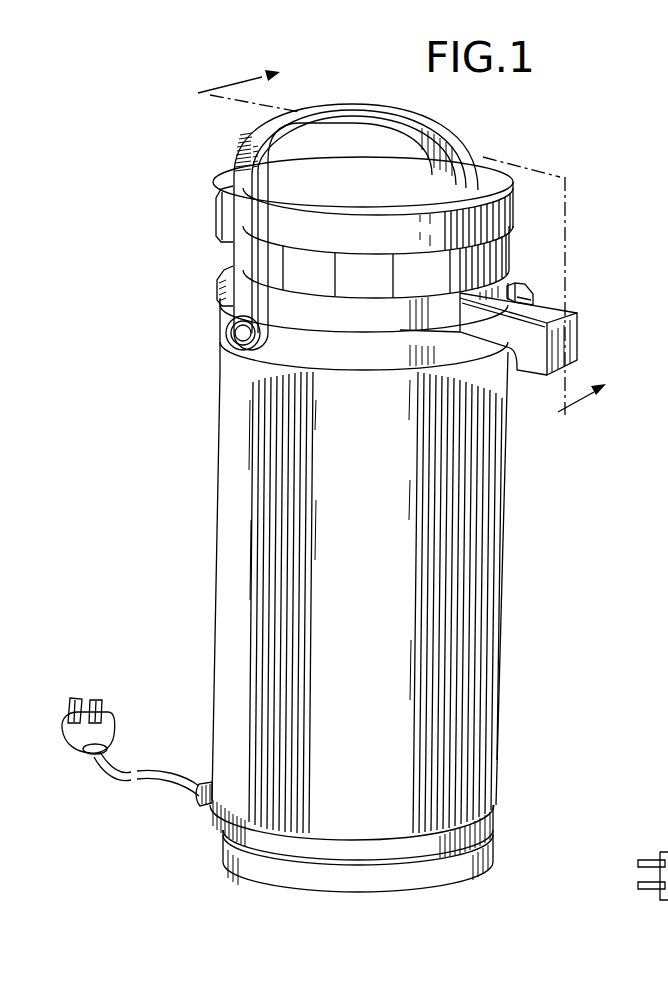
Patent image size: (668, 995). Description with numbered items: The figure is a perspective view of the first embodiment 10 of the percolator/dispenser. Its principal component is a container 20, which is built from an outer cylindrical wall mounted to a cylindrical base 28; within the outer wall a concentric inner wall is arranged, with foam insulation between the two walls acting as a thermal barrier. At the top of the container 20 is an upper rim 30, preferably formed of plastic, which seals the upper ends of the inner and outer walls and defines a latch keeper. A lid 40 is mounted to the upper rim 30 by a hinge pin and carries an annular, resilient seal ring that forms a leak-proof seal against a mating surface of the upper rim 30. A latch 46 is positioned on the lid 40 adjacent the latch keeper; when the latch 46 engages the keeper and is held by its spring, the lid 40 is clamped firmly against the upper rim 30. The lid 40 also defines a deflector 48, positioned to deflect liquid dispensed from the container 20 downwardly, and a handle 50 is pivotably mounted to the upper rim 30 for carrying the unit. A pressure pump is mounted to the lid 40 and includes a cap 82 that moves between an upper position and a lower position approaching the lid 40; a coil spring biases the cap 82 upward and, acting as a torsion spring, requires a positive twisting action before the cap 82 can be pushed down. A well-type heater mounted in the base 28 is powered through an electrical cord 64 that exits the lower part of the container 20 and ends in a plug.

The first embodiment 10 is at (196, 457).
The container 20 is at (218, 612).
The cylindrical base 28 is at (230, 858).
The upper rim 30 is at (224, 336).
The lid 40 is at (217, 292).
The latch 46 is at (530, 286).
The deflector 48 is at (580, 336).
The handle 50 is at (248, 142).
The electrical cord 64 is at (110, 770).
The cap 82 is at (222, 212).